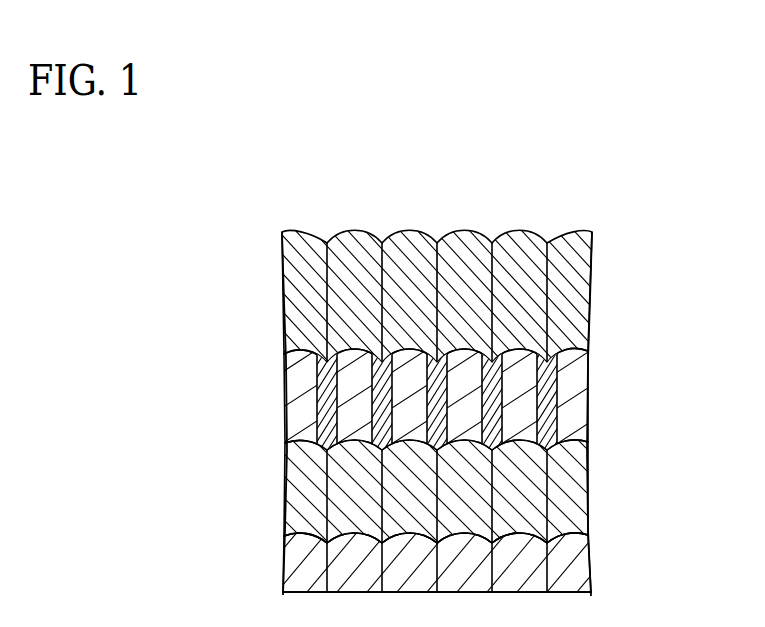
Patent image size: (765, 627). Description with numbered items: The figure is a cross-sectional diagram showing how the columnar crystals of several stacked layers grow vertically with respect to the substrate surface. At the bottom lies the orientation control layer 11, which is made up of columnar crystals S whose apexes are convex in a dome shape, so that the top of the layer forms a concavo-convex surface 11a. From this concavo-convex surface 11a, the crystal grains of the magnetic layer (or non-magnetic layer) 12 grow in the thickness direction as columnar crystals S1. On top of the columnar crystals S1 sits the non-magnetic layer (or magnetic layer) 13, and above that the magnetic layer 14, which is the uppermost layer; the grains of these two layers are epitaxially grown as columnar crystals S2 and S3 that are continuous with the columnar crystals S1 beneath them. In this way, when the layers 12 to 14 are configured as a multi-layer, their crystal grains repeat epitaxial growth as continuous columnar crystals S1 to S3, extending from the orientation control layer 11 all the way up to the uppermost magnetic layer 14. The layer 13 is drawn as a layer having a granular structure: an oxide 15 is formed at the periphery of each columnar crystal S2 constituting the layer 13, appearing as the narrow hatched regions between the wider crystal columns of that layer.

The orientation control layer 11 is at (566, 563).
The concavo-convex surface 11a is at (355, 532).
The magnetic layer (or non-magnetic layer) 12 is at (566, 488).
The non-magnetic layer (or magnetic layer) 13 is at (566, 421).
The magnetic layer 14 is at (568, 290).
The oxide 15 is at (560, 377).
The columnar crystal S is at (347, 563).
The columnar crystal S1 is at (347, 480).
The columnar crystal S2 is at (345, 410).
The columnar crystal S3 is at (345, 302).